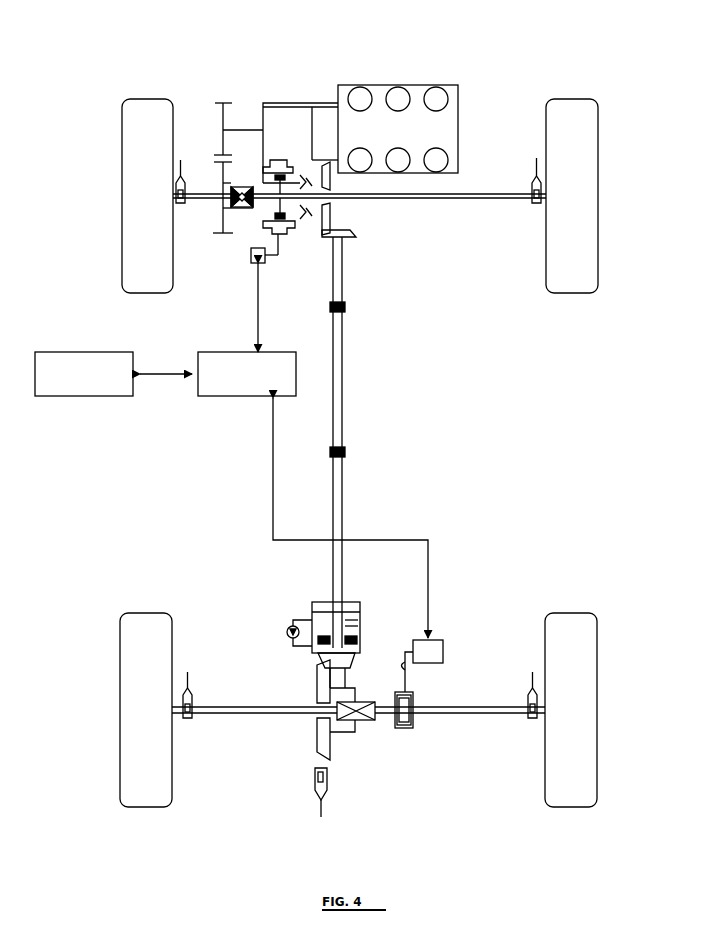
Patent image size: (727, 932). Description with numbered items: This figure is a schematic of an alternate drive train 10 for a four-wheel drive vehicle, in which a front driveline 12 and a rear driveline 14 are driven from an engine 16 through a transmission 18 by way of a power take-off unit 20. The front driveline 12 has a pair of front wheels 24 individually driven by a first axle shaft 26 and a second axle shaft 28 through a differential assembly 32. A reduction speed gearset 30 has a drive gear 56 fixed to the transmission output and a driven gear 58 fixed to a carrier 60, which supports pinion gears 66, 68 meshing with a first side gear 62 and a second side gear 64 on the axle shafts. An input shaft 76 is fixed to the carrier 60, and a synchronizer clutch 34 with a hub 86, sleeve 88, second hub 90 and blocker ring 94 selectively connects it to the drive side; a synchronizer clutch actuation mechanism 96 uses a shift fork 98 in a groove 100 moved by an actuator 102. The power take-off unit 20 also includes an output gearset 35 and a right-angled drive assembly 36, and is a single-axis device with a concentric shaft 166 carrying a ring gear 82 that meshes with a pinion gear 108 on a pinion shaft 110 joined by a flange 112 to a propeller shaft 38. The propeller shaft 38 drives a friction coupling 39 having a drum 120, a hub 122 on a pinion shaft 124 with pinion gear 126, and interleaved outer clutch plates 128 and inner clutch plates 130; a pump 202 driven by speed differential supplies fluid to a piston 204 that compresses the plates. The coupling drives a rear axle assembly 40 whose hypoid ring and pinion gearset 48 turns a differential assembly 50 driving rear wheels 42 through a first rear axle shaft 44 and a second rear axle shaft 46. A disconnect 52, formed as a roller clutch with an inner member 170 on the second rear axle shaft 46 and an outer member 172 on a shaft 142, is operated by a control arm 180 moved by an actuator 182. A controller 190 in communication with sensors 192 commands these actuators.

The drive train 10 is at (541, 70).
The front driveline 12 is at (210, 243).
The rear driveline 14 is at (432, 615).
The engine 16 is at (423, 84).
The transmission 18 is at (313, 102).
The power take-off unit 20 is at (210, 130).
The front wheels 24 is at (133, 172).
The first axle shaft 26 is at (187, 183).
The second axle shaft 28 is at (525, 206).
The reduction speed gearset 30 is at (215, 112).
The differential assembly 32 is at (246, 212).
The synchronizer clutch 34 is at (318, 170).
The output gearset 35 is at (346, 229).
The right-angled drive assembly 36 is at (357, 246).
The propeller shaft 38 is at (345, 404).
The friction coupling 39 is at (370, 600).
The rear axle assembly 40 is at (215, 580).
The rear wheels 42 is at (130, 690).
The first rear axle shaft 44 is at (238, 706).
The second rear axle shaft 46 is at (505, 706).
The hypoid ring and pinion gearset 48 is at (315, 692).
The differential assembly 50 is at (360, 700).
The disconnect 52 is at (408, 742).
The drive gear 56 is at (232, 104).
The driven gear 58 is at (230, 195).
The carrier 60 is at (242, 186).
The first side gear 62 is at (231, 201).
The second side gear 64 is at (240, 211).
The pinion gear 66 is at (241, 185).
The pinion gear 68 is at (230, 210).
The input shaft 76 is at (270, 182).
The ring gear 82 is at (332, 209).
The hub 86 is at (303, 172).
The sleeve 88 is at (275, 160).
The second hub 90 is at (332, 180).
The blocker ring 94 is at (314, 145).
The synchronizer clutch actuation mechanism 96 is at (270, 307).
The shift fork 98 is at (283, 240).
The groove 100 is at (288, 160).
The actuator 102 is at (254, 263).
The pinion gear 108 is at (358, 238).
The pinion shaft 110 is at (333, 250).
The flange 112 is at (346, 305).
The drum 120 is at (316, 602).
The hub 122 is at (346, 603).
The pinion shaft 124 is at (320, 628).
The pinion gear 126 is at (322, 657).
The outer clutch plates 128 is at (348, 622).
The inner clutch plates 130 is at (312, 621).
The shaft 142 is at (384, 712).
The concentric shaft 166 is at (292, 221).
The inner member 170 is at (414, 712).
The outer member 172 is at (395, 727).
The control arm 180 is at (406, 667).
The actuator 182 is at (444, 651).
The controller 190 is at (277, 351).
The sensors 192 is at (181, 205).
The pump 202 is at (287, 633).
The piston 204 is at (358, 642).